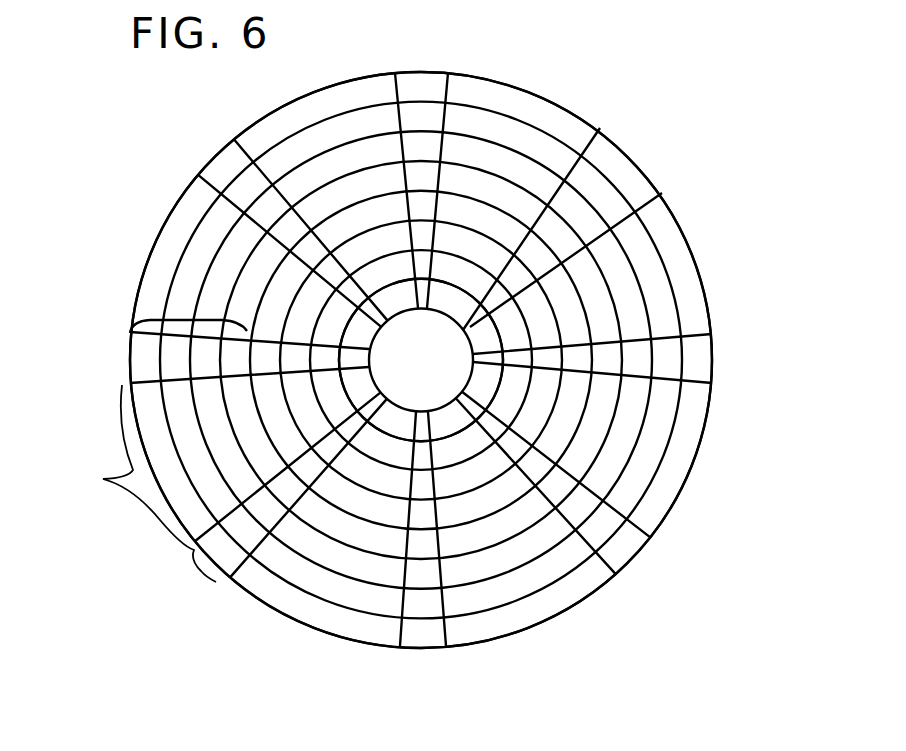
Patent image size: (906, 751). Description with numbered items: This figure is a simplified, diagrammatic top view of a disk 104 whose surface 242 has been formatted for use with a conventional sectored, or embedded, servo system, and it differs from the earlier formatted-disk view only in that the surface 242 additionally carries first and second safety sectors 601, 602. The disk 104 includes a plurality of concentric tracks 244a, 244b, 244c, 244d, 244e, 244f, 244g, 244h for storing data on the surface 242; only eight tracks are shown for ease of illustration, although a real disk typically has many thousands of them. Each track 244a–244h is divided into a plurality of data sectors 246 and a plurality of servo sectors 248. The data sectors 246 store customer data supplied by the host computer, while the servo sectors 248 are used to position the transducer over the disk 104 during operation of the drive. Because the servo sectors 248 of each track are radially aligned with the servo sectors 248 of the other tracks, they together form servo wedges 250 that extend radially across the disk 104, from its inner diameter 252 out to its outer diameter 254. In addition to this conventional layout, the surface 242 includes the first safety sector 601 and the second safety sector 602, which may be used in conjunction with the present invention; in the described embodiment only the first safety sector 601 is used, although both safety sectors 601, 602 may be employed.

The disk 104 is at (283, 106).
The surface 242 is at (352, 181).
The concentric track 244a is at (487, 92).
The concentric track 244b is at (528, 142).
The concentric track 244c is at (527, 178).
The concentric track 244d is at (528, 200).
The concentric track 244e is at (553, 268).
The concentric track 244f is at (533, 292).
The concentric track 244g is at (507, 312).
The concentric track 244h is at (483, 330).
The data sector 246 is at (100, 480).
The servo sector 248 is at (230, 583).
The servo wedge 250 is at (247, 330).
The inner diameter 252 is at (380, 381).
The outer diameter 254 is at (283, 613).
The first safety sector 601 is at (480, 503).
The second safety sector 602 is at (566, 421).